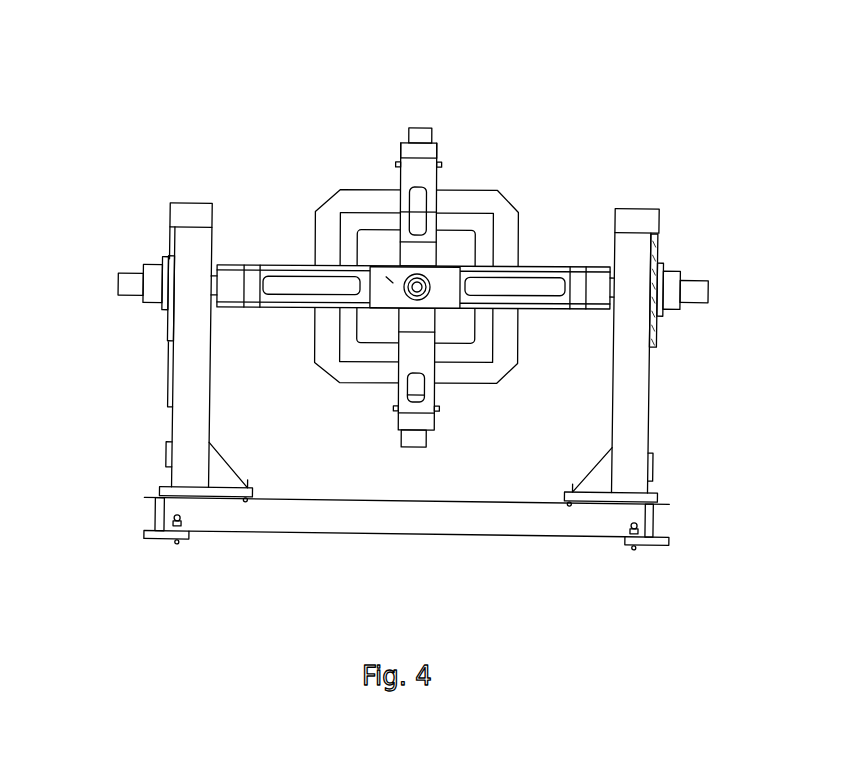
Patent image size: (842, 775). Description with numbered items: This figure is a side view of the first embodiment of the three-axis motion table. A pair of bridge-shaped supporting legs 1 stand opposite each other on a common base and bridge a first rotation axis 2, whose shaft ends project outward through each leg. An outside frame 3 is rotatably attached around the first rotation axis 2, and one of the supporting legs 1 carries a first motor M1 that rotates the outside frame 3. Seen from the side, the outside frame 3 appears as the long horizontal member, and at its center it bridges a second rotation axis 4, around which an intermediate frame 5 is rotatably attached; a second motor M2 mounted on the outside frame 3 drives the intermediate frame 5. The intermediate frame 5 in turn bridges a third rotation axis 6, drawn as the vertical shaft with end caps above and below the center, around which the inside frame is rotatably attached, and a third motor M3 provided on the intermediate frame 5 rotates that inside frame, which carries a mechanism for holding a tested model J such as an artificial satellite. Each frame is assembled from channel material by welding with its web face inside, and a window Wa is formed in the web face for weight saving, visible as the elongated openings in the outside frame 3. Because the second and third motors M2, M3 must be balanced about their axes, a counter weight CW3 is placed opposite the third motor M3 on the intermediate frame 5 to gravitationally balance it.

The supporting leg 1 is at (172, 409).
The first rotation axis 2 is at (120, 290).
The outside frame 3 is at (540, 266).
The second rotation axis 4 is at (437, 266).
The intermediate frame 5 is at (399, 181).
The third rotation axis 6 is at (423, 137).
The first motor M1 is at (657, 315).
The second motor M2 is at (366, 257).
The third motor M3 is at (397, 395).
The counter weight CW3 is at (400, 158).
The tested model J is at (453, 333).
The window Wa is at (305, 295).